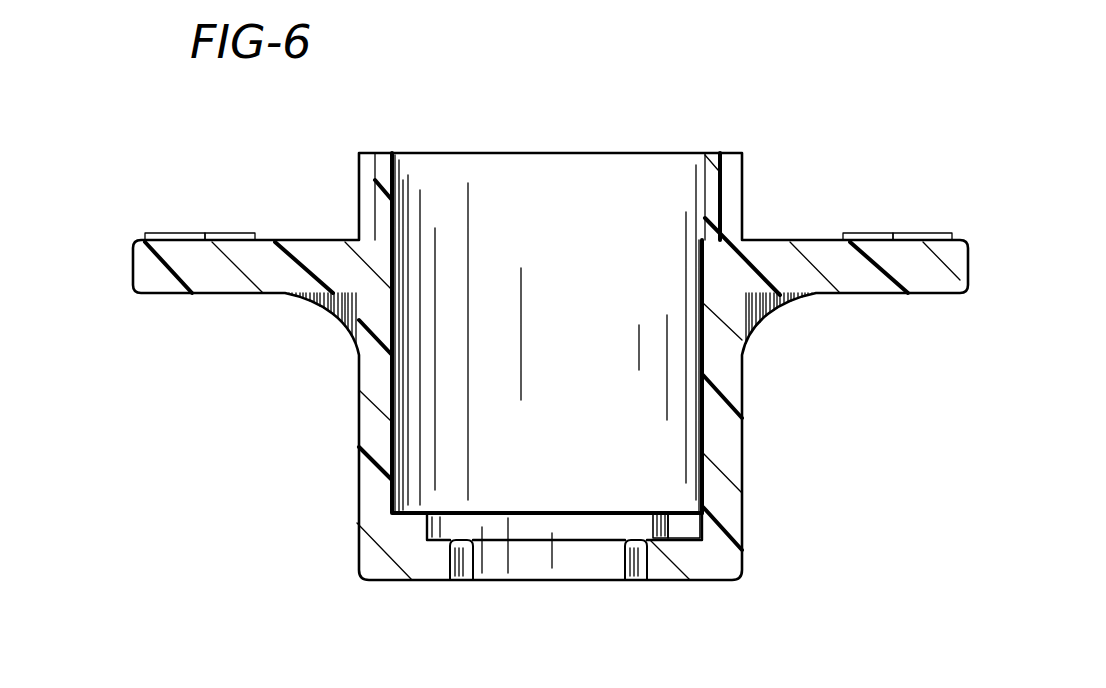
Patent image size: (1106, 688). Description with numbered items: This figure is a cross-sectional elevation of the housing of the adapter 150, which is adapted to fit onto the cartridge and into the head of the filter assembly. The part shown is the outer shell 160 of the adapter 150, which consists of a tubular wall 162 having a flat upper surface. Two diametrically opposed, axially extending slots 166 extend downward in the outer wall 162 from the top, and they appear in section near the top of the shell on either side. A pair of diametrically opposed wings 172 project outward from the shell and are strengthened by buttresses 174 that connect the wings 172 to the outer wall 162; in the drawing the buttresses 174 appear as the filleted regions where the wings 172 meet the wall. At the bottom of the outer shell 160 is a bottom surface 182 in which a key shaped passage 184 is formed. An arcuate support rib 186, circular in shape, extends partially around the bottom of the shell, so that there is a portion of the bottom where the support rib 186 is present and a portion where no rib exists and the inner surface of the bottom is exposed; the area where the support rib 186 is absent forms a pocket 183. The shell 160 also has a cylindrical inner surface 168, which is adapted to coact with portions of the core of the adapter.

The adapter 150 is at (913, 132).
The outer shell 160 is at (743, 442).
The tubular wall 162 is at (724, 497).
The axially extending slots 166 is at (366, 181).
The cylindrical inner surface 168 is at (392, 421).
The wings 172 is at (133, 266).
The buttresses 174 is at (336, 312).
The bottom surface 182 is at (700, 582).
The pocket 183 is at (651, 529).
The key shaped passage 184 is at (630, 562).
The arcuate support rib 186 is at (683, 513).